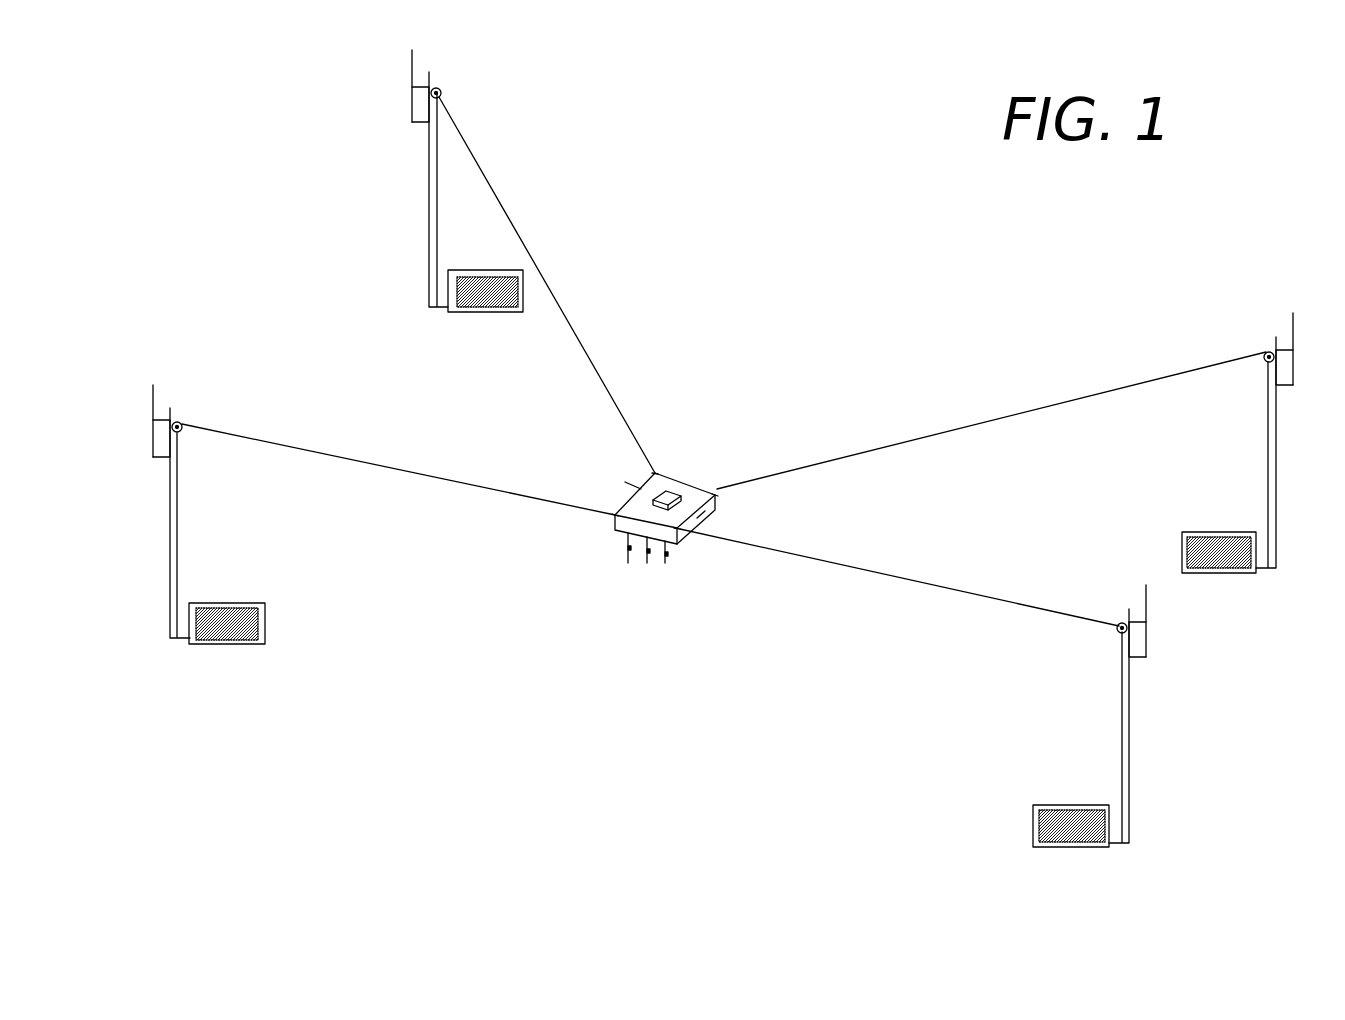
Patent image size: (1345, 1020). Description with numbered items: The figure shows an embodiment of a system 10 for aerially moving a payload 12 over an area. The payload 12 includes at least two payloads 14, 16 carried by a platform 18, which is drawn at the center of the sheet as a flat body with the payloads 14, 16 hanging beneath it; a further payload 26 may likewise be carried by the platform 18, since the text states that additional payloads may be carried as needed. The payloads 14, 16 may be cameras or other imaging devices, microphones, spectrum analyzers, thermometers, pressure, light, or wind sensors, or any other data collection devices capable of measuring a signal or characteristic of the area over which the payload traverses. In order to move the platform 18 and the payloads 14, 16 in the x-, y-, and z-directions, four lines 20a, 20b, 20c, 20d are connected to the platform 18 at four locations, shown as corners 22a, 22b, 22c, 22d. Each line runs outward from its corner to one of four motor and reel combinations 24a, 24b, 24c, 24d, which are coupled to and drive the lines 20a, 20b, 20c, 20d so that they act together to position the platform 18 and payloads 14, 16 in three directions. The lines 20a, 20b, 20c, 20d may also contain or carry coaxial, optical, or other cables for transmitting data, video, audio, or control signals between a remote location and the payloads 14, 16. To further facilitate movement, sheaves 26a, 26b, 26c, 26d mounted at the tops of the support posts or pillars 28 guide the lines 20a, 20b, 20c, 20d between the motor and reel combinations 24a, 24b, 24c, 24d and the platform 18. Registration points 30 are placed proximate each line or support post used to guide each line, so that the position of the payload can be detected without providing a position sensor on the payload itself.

The system for aerially moving a payload 10 is at (938, 330).
The payload 12 is at (700, 472).
The payload 14 is at (628, 563).
The payload 16 is at (665, 563).
The platform 18 is at (702, 508).
The line 20a is at (390, 467).
The line 20b is at (505, 202).
The line 20c is at (920, 435).
The line 20d is at (878, 568).
The corner 22a is at (617, 513).
The corner 22b is at (658, 470).
The corner 22c is at (717, 490).
The corner 22d is at (682, 533).
The motor and reel combination 24a is at (228, 603).
The motor and reel combination 24b is at (467, 312).
The motor and reel combination 24c is at (1205, 532).
The motor and reel combination 24d is at (1033, 825).
The support leg 26 is at (647, 563).
The sheave 26a is at (181, 431).
The sheave 26b is at (441, 89).
The sheave 26c is at (1266, 362).
The sheave 26d is at (1119, 631).
The posts or pillars 28 is at (632, 492).
The registration points 30 is at (153, 440).